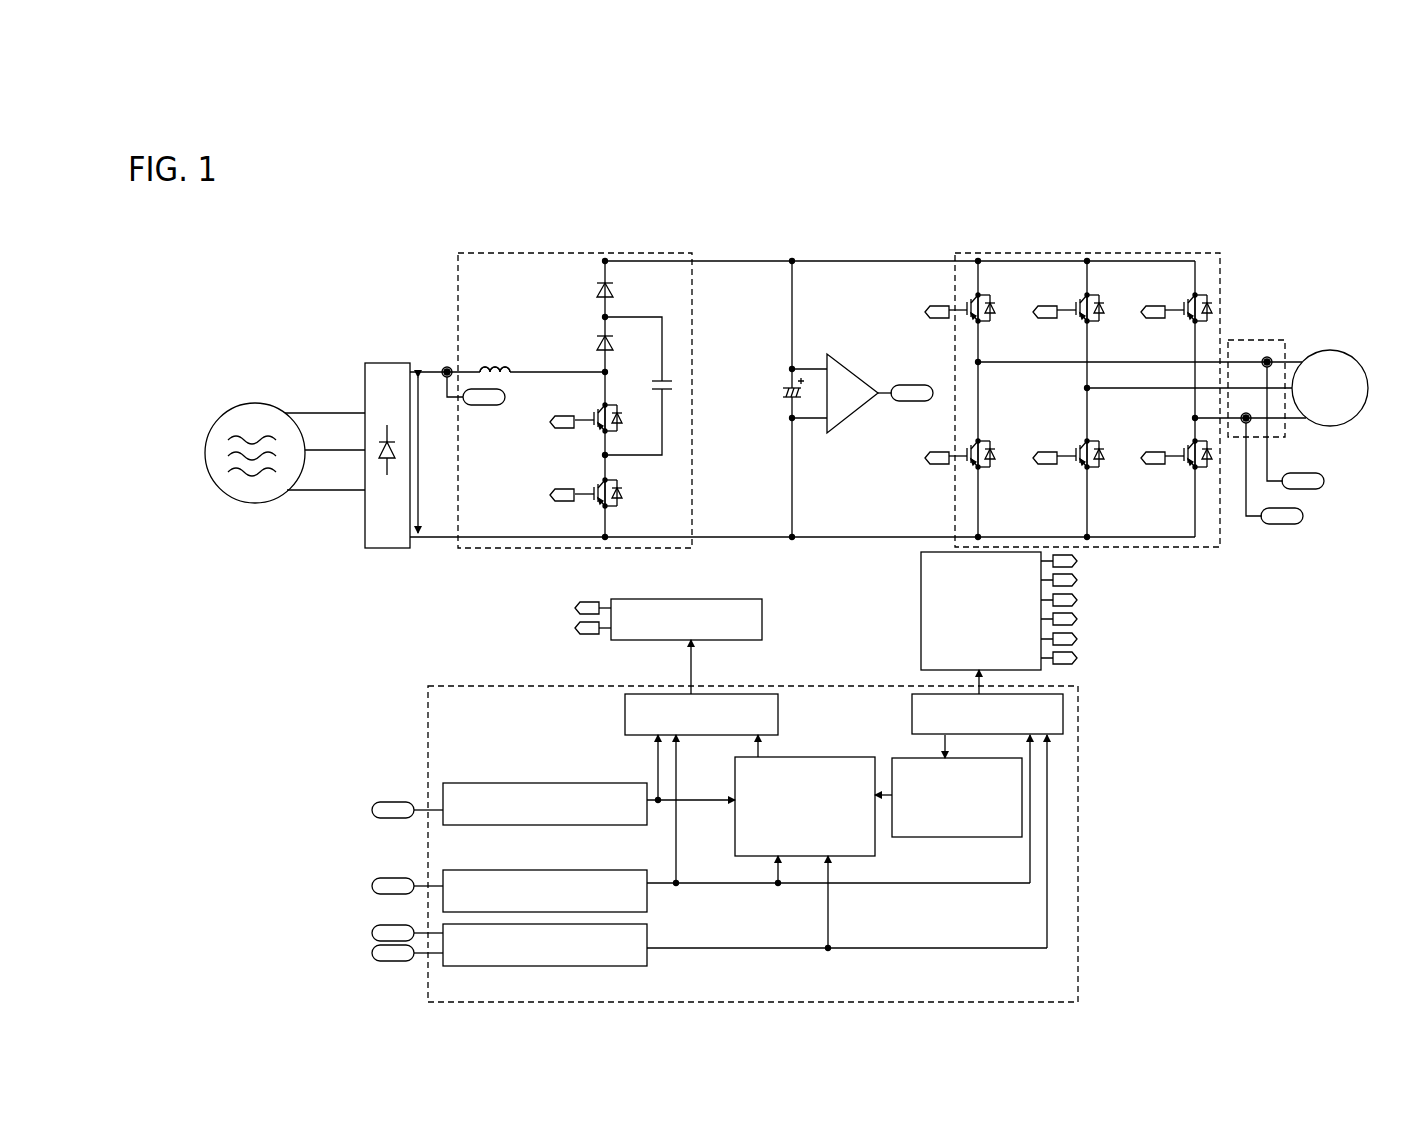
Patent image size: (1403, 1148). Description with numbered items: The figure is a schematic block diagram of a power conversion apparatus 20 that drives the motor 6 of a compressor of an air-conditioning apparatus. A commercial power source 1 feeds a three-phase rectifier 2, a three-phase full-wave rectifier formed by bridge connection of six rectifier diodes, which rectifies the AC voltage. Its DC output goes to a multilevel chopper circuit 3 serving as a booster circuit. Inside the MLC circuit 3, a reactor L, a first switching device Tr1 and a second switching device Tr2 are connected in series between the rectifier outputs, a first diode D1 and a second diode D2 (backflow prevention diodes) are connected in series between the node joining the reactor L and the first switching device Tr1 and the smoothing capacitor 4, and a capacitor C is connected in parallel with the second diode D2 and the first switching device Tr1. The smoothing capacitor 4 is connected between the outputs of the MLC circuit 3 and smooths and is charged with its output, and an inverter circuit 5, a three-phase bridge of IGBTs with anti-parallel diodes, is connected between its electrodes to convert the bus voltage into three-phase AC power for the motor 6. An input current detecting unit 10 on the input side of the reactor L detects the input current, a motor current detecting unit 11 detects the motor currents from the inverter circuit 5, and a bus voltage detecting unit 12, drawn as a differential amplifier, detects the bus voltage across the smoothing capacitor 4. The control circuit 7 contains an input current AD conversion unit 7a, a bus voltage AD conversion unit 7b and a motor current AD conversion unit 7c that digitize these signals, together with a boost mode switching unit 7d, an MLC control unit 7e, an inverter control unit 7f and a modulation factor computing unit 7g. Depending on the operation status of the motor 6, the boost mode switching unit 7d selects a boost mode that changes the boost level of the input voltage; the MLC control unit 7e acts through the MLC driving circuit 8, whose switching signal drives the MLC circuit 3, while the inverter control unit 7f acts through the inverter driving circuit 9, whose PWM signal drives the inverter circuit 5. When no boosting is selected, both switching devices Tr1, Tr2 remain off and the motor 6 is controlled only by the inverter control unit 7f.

The commercial power source 1 is at (268, 404).
The three-phase rectifier 2 is at (378, 363).
The multilevel chopper circuit (MLC circuit) 3 is at (622, 254).
The smoothing capacitor 4 is at (785, 398).
The inverter circuit 5 is at (1082, 253).
The motor 6 is at (1338, 352).
The control circuit 7 is at (1078, 830).
The input current AD conversion unit 7a is at (552, 783).
The bus voltage AD conversion unit 7b is at (552, 870).
The motor current AD conversion unit 7c is at (545, 966).
The boost mode switching unit 7d is at (865, 757).
The MLC control unit 7e is at (778, 712).
The inverter control unit 7f is at (1063, 712).
The modulation factor computing unit 7g is at (968, 837).
The MLC driving circuit 8 is at (762, 615).
The inverter driving circuit 9 is at (921, 622).
The input current detecting unit 10 is at (447, 366).
The motor current detecting unit 11 is at (1262, 340).
The bus voltage detecting unit 12 is at (852, 412).
The power conversion apparatus 20 is at (1160, 678).
The reactor L is at (505, 366).
The capacitor C is at (668, 381).
The first diode D1 is at (614, 292).
The second diode D2 is at (614, 345).
The first switching device Tr1 is at (598, 428).
The second switching device Tr2 is at (598, 502).